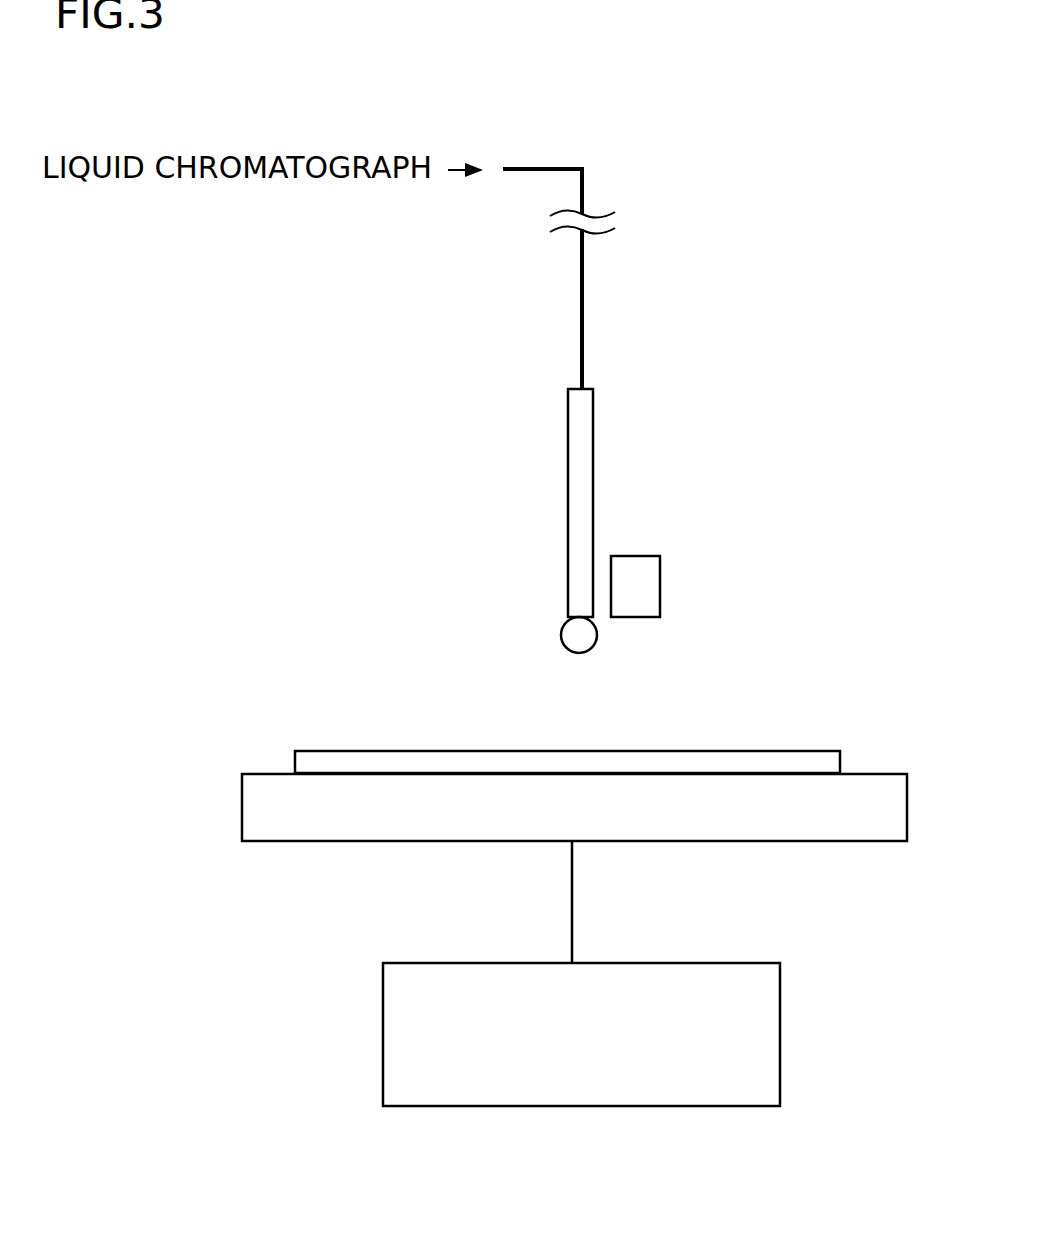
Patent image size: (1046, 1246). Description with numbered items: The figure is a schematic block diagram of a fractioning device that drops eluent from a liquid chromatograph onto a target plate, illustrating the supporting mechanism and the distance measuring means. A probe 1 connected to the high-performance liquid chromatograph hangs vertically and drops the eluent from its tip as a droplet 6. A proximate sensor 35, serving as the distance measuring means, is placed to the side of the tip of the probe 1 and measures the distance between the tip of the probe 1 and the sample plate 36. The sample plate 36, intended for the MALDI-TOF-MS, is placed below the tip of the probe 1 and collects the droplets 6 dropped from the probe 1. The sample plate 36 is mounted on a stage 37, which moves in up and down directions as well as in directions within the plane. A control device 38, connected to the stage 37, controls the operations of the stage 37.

The probe 1 is at (580, 455).
The droplet 6 is at (570, 633).
The proximate sensor 35 is at (660, 580).
The sample plate 36 is at (770, 750).
The stage 37 is at (878, 797).
The control device 38 is at (780, 1046).